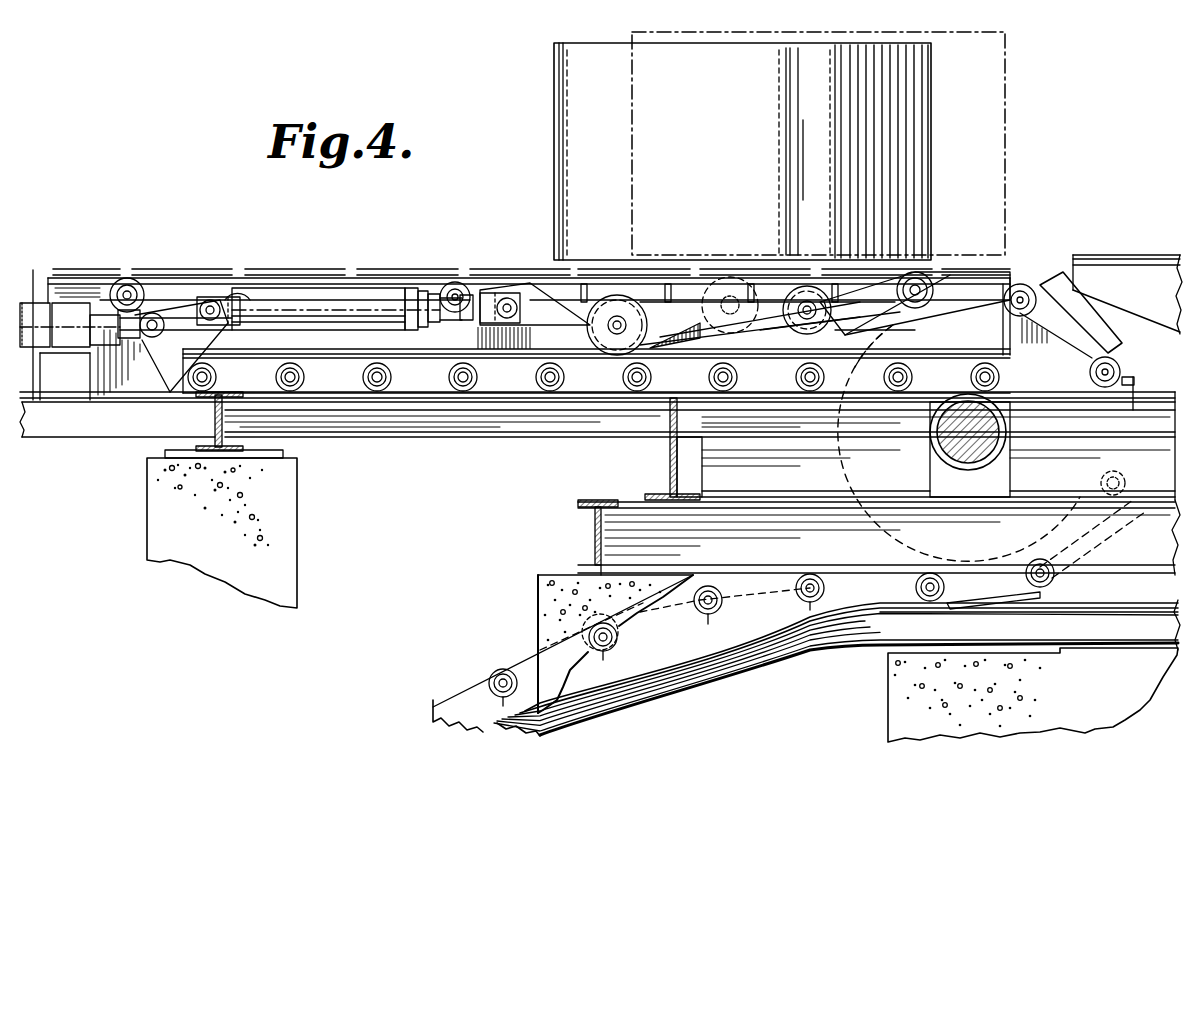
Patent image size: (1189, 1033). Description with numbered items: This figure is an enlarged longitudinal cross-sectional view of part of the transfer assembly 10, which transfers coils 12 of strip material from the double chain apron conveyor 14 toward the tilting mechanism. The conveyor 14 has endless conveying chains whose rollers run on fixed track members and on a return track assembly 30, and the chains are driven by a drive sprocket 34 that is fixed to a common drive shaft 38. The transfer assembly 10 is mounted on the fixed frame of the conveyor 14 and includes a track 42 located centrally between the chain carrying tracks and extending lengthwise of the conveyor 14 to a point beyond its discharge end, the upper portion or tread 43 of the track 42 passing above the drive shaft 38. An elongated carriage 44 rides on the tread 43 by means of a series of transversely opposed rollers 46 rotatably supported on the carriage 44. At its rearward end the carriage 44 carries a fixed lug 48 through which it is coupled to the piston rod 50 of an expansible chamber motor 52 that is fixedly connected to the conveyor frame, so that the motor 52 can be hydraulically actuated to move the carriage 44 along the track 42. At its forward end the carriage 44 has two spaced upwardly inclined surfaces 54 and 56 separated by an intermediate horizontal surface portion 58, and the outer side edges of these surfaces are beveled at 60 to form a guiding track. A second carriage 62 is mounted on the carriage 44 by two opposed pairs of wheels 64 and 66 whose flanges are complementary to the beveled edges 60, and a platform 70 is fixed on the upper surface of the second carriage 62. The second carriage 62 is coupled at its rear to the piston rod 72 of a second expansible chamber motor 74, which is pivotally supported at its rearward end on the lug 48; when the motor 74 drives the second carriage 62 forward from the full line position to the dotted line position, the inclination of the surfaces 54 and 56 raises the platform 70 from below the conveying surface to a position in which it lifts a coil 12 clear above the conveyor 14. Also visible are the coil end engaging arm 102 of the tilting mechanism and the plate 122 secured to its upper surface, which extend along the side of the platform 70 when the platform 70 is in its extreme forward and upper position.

The transfer assembly 10 is at (433, 288).
The coil of strip material 12 is at (765, 141).
The double chain apron conveyor 14 is at (183, 268).
The return track assembly 30 is at (668, 676).
The drive sprocket 34 is at (855, 530).
The drive shaft 38 is at (983, 462).
The track 42 is at (575, 420).
The tread 43 is at (616, 390).
The carriage 44 is at (503, 380).
The rollers 46 is at (364, 371).
The lug 48 is at (187, 344).
The piston rod 50 is at (122, 336).
The expansible chamber motor 52 is at (40, 303).
The inclined surface 54 is at (693, 340).
The inclined surface 56 is at (893, 318).
The horizontal surface portion 58 is at (777, 330).
The beveled edges 60 is at (840, 328).
The second carriage 62 is at (652, 285).
The wheels 64 is at (617, 295).
The wheels 66 is at (815, 290).
The platform 70 is at (542, 278).
The piston rod 72 is at (480, 313).
The expansible chamber motor 74 is at (296, 295).
The coil end engaging arm 102 is at (1158, 298).
The plate 122 is at (1115, 257).